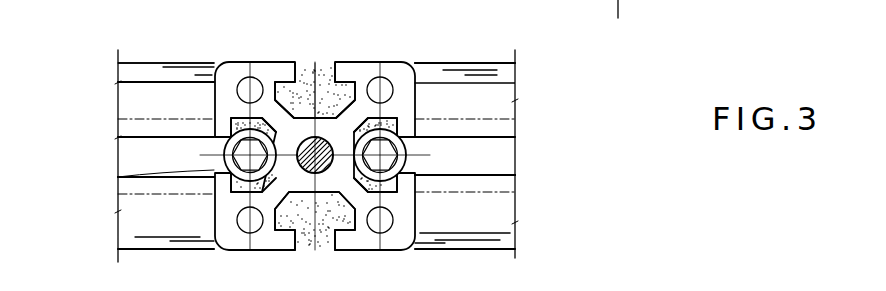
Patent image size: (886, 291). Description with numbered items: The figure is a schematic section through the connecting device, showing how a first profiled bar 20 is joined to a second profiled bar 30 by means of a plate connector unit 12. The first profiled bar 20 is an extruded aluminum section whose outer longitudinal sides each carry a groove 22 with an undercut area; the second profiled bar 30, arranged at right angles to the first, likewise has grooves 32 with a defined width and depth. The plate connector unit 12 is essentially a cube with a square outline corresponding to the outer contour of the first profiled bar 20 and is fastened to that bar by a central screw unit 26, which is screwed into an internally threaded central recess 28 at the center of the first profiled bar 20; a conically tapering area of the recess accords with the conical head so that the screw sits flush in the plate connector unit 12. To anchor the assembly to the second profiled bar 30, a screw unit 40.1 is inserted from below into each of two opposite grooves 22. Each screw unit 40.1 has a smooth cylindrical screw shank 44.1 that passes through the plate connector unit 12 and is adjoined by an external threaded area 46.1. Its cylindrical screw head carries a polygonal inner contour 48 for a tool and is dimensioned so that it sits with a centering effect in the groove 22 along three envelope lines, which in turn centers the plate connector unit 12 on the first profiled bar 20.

The plate connector unit 12 is at (340, 97).
The first profiled bar 20 is at (258, 68).
The groove 22 is at (332, 62).
The central screw unit 26 is at (214, 112).
The central recess 28 is at (322, 147).
The second profiled bar 30 is at (515, 100).
The groove 32 is at (480, 162).
The screw unit 40.1 is at (216, 149).
The screw shank 44.1 is at (206, 0).
The external threaded area 46.1 is at (465, 31).
The polygonal inner contour 48 is at (120, 177).